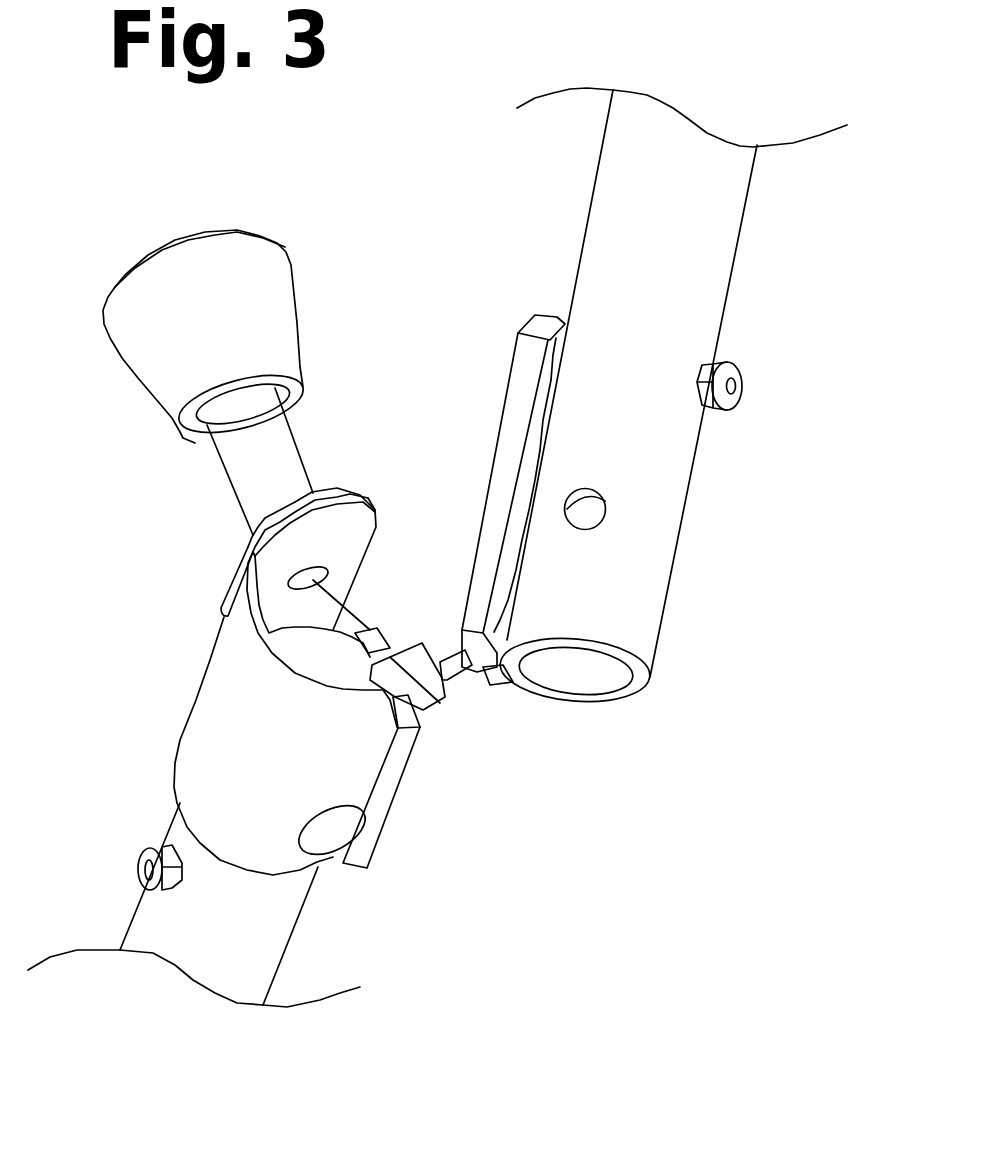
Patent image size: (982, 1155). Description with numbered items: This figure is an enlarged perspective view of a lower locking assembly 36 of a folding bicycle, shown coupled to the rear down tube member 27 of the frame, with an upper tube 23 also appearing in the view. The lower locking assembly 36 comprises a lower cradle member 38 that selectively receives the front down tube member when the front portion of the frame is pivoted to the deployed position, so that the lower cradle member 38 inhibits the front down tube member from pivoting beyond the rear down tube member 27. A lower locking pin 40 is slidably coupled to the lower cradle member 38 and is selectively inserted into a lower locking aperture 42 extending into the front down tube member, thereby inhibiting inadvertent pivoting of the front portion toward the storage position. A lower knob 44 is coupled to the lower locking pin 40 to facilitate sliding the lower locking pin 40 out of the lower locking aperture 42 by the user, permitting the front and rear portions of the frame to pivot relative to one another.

The upper tube 23 is at (612, 397).
The rear down tube member 27 is at (194, 902).
The lower locking assembly 36 is at (369, 535).
The lower cradle member 38 is at (330, 722).
The lower locking pin 40 is at (467, 609).
The lower locking aperture 42 is at (683, 567).
The lower knob 44 is at (173, 356).